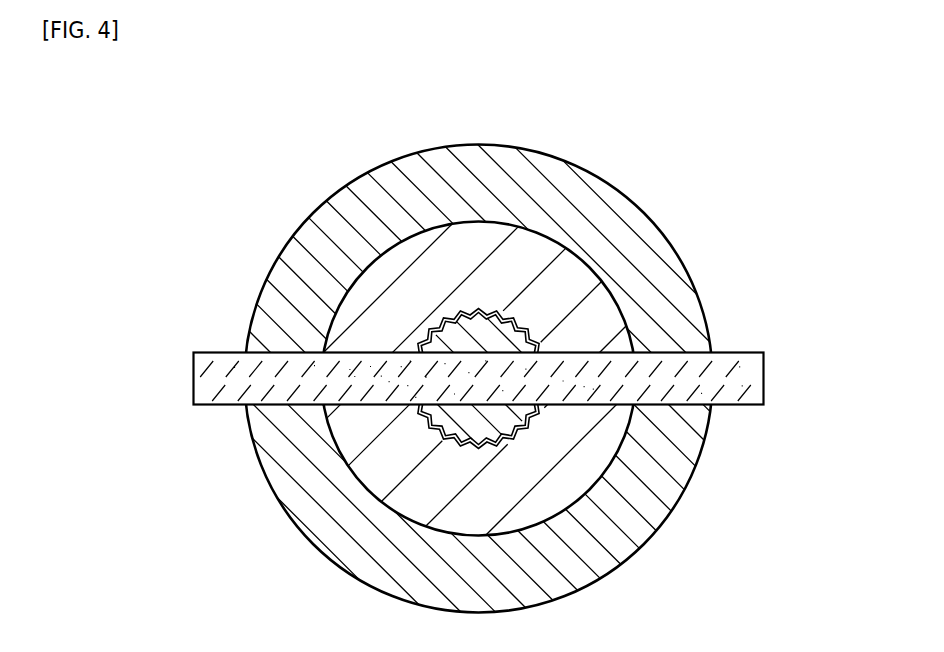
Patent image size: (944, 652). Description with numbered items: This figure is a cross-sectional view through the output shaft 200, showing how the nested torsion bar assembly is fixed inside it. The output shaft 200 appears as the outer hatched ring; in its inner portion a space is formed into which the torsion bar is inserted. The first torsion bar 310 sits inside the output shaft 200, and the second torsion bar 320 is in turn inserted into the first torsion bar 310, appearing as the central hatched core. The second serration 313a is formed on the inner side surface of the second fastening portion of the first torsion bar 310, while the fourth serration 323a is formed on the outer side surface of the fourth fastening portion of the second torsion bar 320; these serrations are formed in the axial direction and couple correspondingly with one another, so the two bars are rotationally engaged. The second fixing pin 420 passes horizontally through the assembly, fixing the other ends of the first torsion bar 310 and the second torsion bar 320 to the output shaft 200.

The output shaft 200 is at (349, 183).
The first torsion bar 310 is at (540, 253).
The second serration 313a is at (465, 308).
The second torsion bar 320 is at (529, 338).
The fourth serration 323a is at (541, 343).
The second fixing pin 420 is at (747, 370).